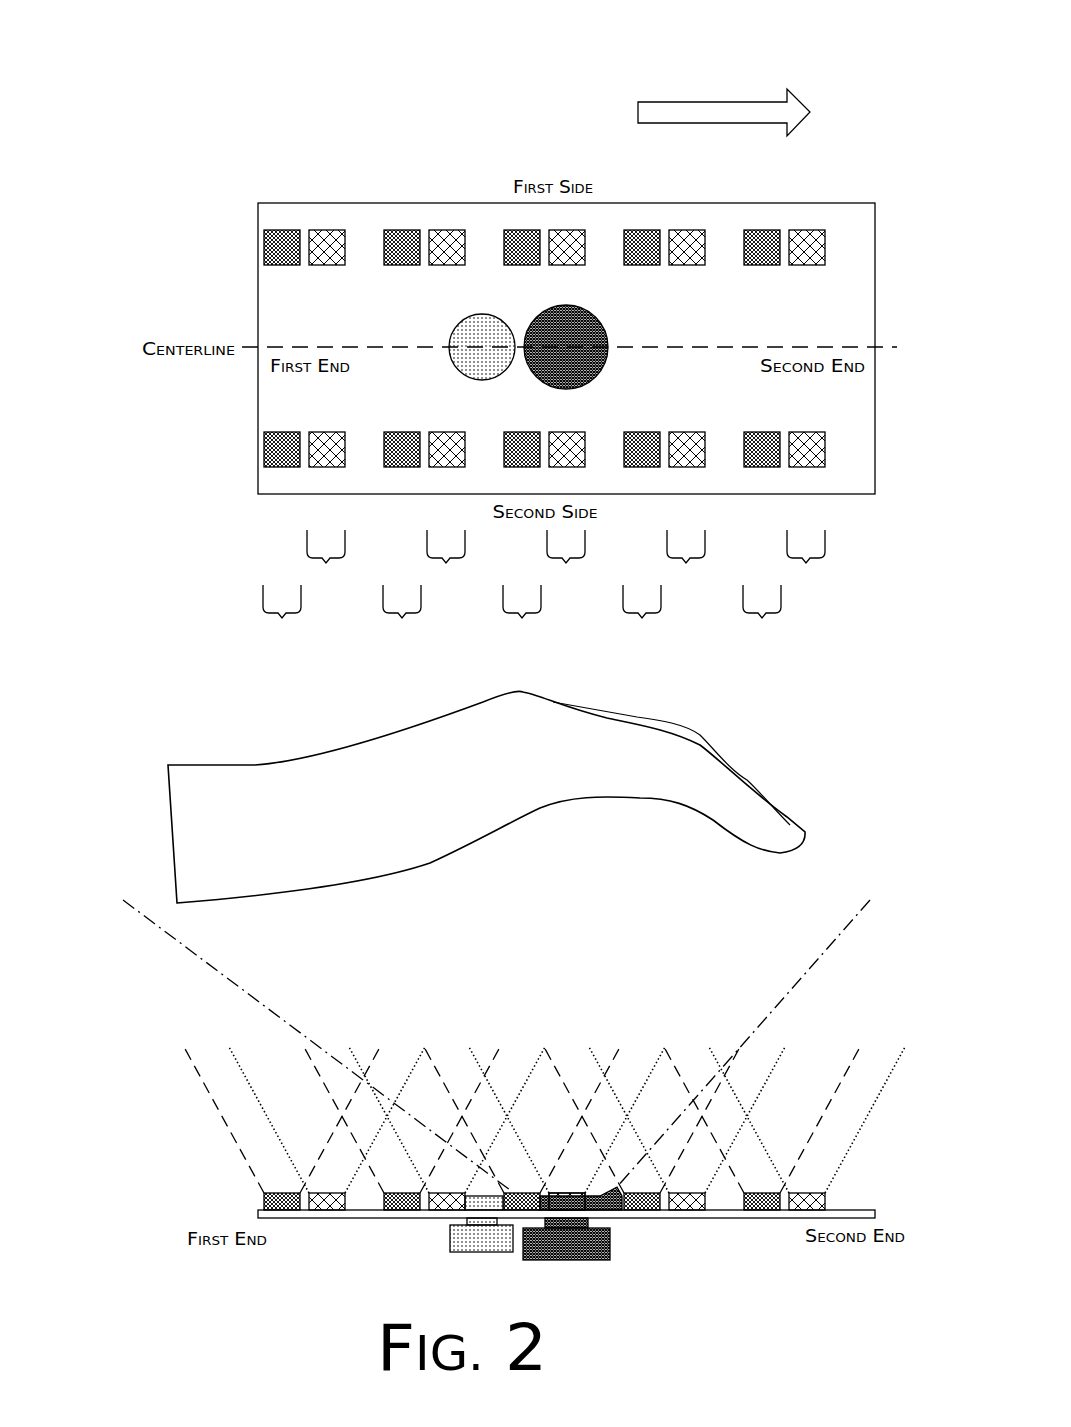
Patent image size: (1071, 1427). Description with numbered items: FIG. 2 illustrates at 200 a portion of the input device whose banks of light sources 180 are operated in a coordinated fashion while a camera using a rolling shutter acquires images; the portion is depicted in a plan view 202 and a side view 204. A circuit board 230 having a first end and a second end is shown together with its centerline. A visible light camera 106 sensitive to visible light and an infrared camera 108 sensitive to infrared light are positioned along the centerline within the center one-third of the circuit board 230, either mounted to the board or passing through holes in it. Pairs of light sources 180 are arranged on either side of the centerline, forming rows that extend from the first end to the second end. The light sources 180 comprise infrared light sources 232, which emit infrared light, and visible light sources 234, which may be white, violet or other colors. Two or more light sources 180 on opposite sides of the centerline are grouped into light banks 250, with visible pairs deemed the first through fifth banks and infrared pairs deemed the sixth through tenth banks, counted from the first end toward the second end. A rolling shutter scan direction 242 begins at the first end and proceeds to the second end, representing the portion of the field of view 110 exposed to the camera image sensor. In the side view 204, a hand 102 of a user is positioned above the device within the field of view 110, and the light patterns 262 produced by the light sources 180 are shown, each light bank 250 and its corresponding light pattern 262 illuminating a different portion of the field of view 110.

The portion of the input device 200 is at (762, 50).
The plan view 202 is at (117, 33).
The side view 204 is at (117, 632).
The hand 102 is at (209, 785).
The visible light camera 106 is at (466, 345).
The infrared camera 108 is at (531, 375).
The field of view 110 is at (471, 1028).
The light sources 180 is at (431, 625).
The circuit board 230 is at (277, 487).
The infrared light sources 232 is at (280, 252).
The visible light sources 234 is at (248, 479).
The rolling shutter scan direction 242 is at (578, 115).
The light bank 250 is at (481, 590).
The light pattern 262 is at (505, 1099).